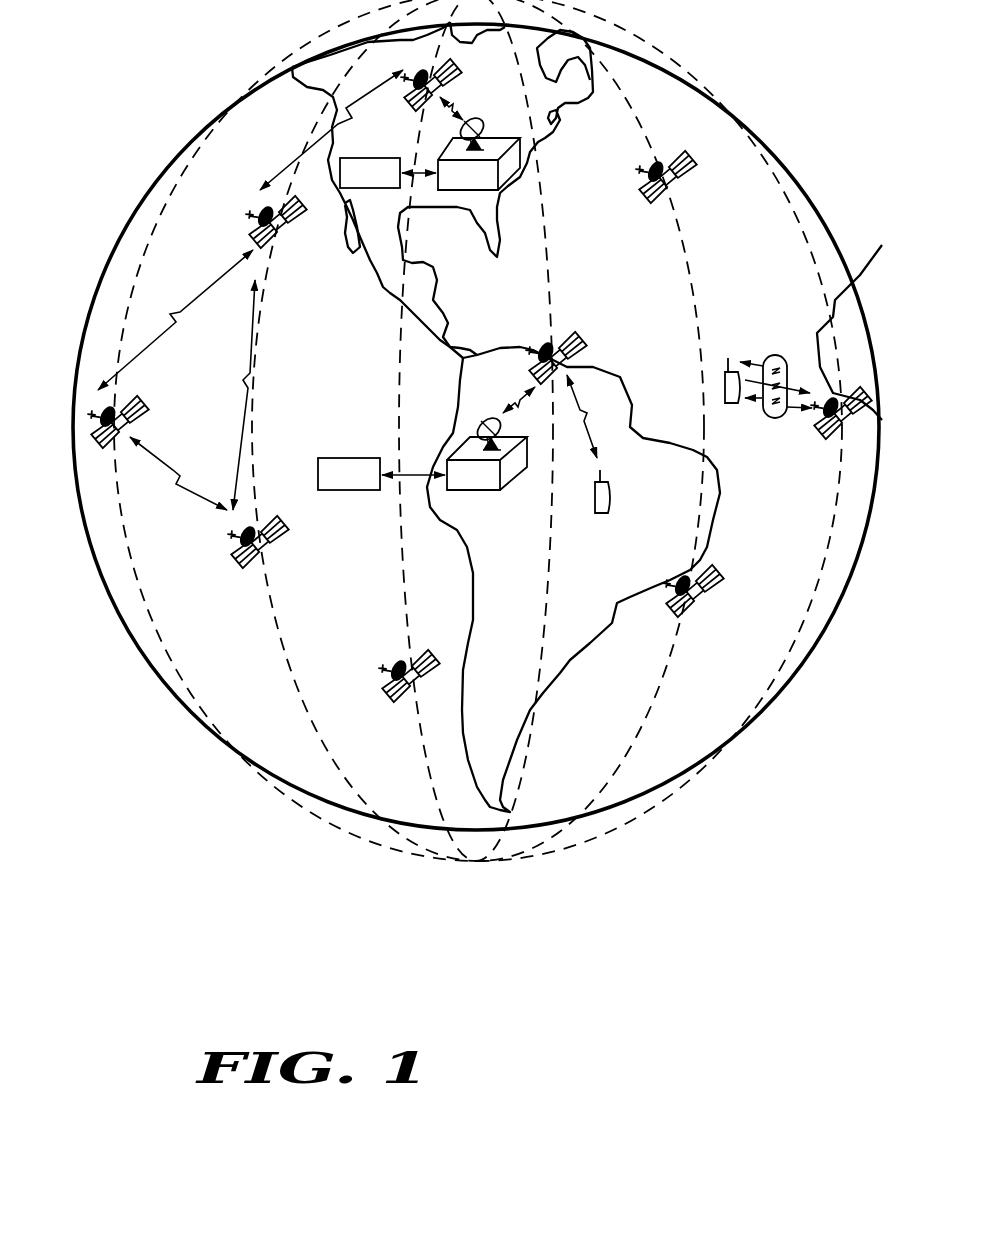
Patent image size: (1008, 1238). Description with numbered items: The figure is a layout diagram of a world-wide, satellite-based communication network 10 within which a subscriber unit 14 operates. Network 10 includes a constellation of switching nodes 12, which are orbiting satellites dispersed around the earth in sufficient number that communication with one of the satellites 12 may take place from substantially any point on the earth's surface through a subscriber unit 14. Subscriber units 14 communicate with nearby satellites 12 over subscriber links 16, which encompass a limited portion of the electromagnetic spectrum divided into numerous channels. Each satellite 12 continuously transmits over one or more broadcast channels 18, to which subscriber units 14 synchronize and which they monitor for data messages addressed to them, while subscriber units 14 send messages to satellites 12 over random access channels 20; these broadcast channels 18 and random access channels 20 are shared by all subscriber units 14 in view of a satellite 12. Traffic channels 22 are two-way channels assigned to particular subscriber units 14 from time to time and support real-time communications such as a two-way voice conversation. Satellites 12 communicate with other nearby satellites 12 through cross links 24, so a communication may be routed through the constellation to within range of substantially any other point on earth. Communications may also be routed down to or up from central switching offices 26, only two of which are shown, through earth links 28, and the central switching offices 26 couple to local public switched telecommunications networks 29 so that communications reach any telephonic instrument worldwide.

The satellite-based communication network 10 is at (481, 940).
The switching node 12 is at (413, 115).
The subscriber unit 14 is at (602, 513).
The subscriber link 16 is at (587, 414).
The broadcast channel 18 is at (758, 358).
The random access channel 20 is at (793, 357).
The traffic channel 22 is at (793, 417).
The cross link 24 is at (203, 297).
The central switching office 26 is at (482, 493).
The earth link 28 is at (460, 101).
The public switched telecommunications network 29 is at (373, 192).